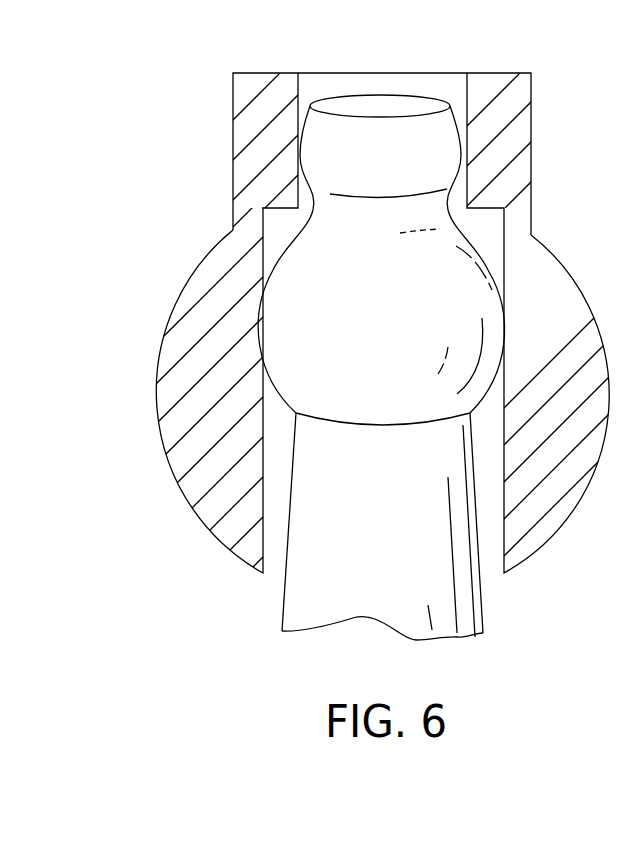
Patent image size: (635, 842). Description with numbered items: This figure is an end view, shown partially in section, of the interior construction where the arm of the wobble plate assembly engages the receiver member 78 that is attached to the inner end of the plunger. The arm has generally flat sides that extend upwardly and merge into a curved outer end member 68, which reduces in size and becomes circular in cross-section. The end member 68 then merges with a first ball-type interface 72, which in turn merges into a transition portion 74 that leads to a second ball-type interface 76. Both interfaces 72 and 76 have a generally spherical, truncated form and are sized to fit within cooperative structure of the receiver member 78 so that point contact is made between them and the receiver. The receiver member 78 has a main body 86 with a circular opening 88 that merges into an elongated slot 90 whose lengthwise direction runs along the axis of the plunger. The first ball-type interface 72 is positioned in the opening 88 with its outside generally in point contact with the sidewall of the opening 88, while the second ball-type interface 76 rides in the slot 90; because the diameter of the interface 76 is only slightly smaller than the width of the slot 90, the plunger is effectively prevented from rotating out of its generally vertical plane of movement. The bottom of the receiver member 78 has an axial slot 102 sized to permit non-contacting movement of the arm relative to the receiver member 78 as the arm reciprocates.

The curved outer end member 68 is at (362, 590).
The first ball-type interface 72 is at (313, 326).
The transition portion 74 is at (378, 215).
The second ball-type interface 76 is at (346, 137).
The receiver member 78 is at (542, 108).
The main body 86 is at (190, 447).
The circular opening 88 is at (265, 263).
The elongated slot 90 is at (458, 88).
The axial slot 102 is at (500, 551).